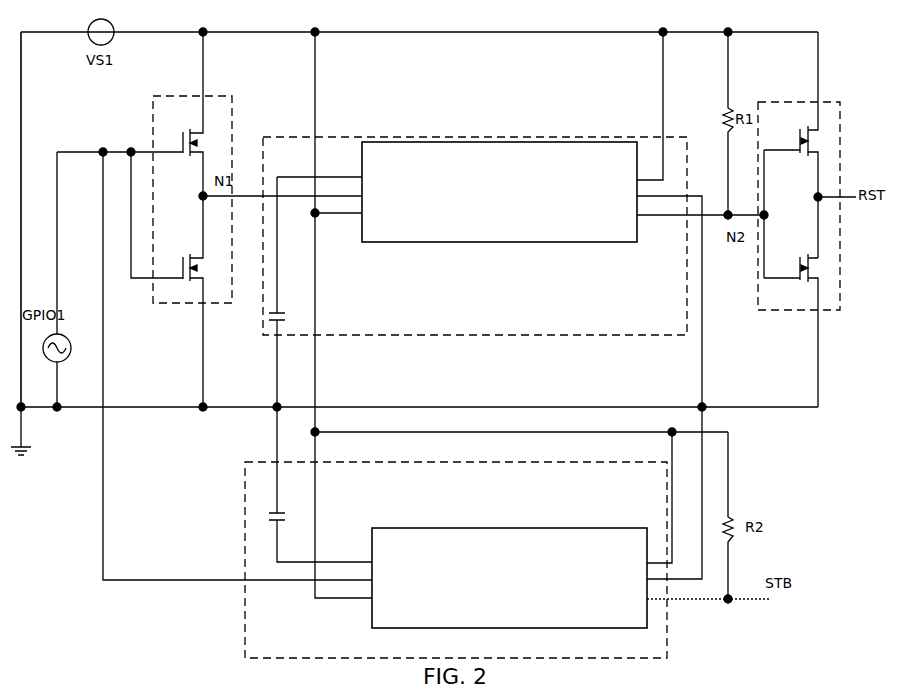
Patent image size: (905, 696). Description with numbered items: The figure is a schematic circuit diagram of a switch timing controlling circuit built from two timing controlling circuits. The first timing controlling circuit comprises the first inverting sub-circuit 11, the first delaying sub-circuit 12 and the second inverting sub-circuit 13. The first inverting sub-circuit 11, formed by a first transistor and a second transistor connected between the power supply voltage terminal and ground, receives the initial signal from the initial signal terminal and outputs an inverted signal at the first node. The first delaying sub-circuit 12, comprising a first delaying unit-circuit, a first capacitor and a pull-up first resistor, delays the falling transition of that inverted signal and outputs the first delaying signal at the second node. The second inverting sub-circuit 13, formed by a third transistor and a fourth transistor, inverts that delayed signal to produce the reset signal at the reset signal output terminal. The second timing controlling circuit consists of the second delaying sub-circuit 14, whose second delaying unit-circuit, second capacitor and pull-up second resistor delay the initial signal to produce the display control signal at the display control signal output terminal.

The first inverting sub-circuit 11 is at (153, 128).
The first delaying sub-circuit 12 is at (392, 137).
The second inverting sub-circuit 13 is at (782, 102).
The second delaying sub-circuit 14 is at (245, 606).